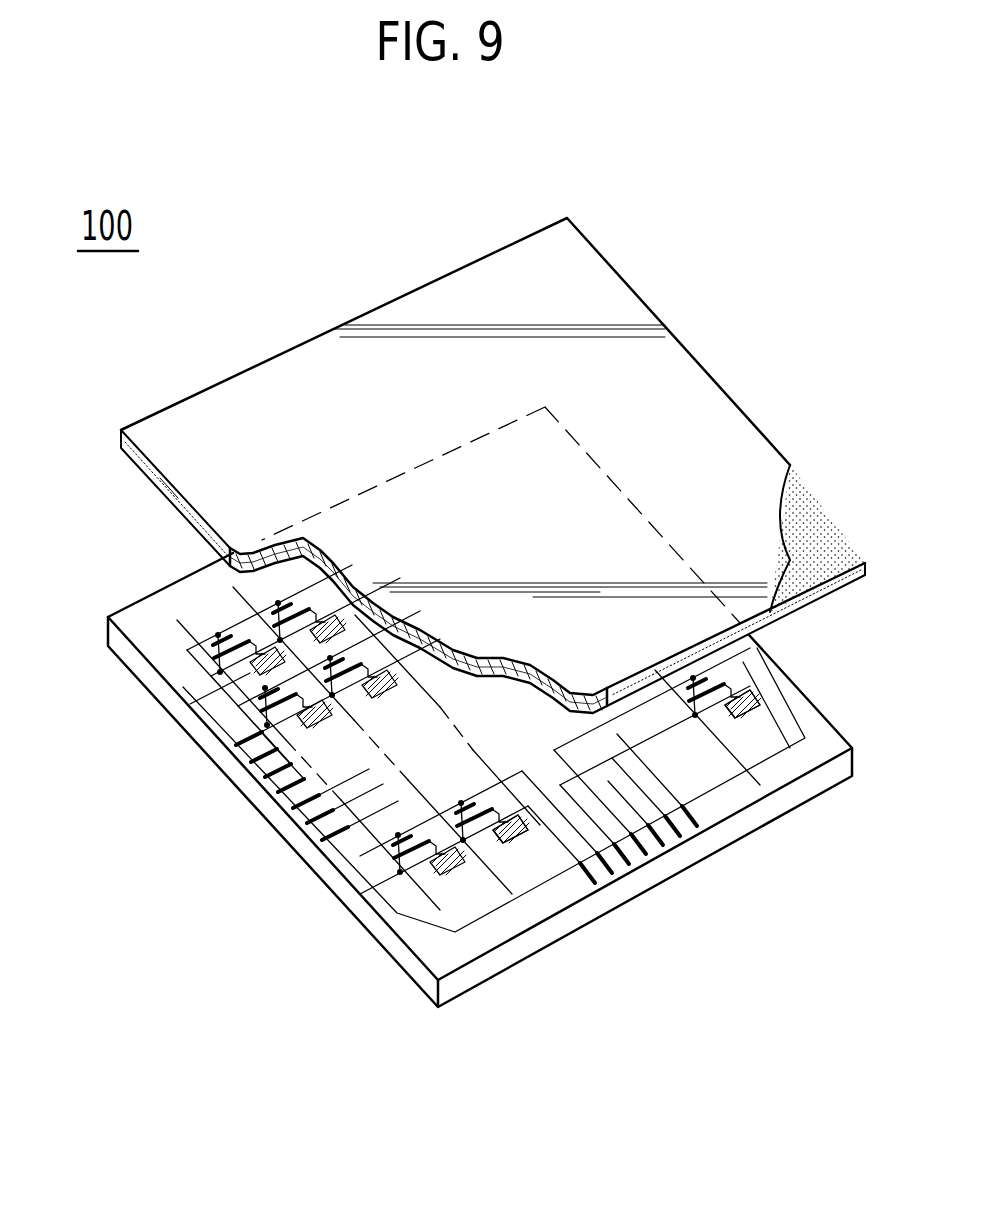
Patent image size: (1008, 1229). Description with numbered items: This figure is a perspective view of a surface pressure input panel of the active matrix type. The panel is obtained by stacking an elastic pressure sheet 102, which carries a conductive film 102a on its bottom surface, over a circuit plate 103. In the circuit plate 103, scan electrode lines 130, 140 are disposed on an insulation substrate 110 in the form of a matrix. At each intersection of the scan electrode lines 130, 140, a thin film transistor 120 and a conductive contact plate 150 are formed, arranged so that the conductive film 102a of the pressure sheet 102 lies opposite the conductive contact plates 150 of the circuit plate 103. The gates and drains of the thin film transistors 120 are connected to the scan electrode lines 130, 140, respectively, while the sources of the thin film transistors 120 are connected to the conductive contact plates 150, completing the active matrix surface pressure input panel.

The elastic pressure sheet 102 is at (323, 350).
The conductive film 102a is at (167, 498).
The circuit plate 103 is at (188, 792).
The insulation substrate 110 is at (510, 957).
The thin film transistor 120 is at (388, 843).
The scan electrode line 130 is at (233, 590).
The scan electrode line 140 is at (207, 695).
The conductive contact plate 150 is at (510, 843).